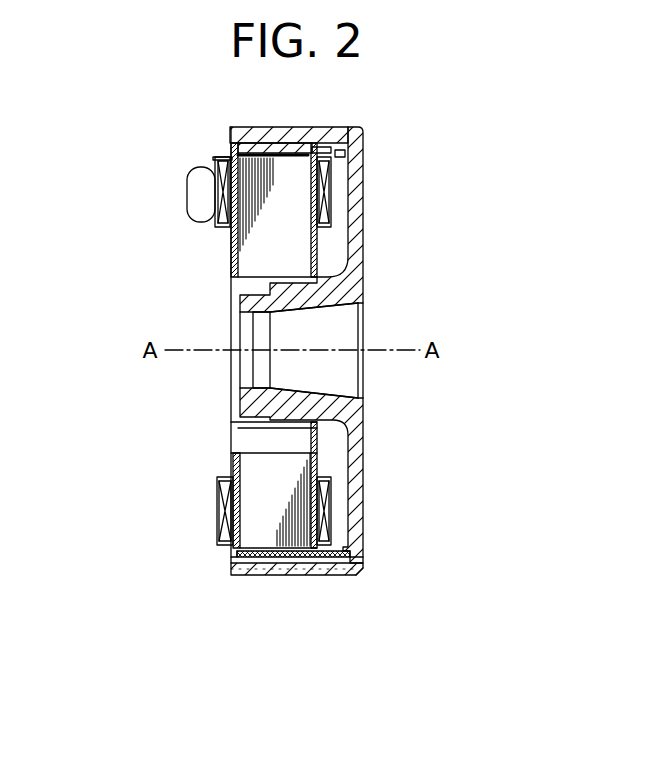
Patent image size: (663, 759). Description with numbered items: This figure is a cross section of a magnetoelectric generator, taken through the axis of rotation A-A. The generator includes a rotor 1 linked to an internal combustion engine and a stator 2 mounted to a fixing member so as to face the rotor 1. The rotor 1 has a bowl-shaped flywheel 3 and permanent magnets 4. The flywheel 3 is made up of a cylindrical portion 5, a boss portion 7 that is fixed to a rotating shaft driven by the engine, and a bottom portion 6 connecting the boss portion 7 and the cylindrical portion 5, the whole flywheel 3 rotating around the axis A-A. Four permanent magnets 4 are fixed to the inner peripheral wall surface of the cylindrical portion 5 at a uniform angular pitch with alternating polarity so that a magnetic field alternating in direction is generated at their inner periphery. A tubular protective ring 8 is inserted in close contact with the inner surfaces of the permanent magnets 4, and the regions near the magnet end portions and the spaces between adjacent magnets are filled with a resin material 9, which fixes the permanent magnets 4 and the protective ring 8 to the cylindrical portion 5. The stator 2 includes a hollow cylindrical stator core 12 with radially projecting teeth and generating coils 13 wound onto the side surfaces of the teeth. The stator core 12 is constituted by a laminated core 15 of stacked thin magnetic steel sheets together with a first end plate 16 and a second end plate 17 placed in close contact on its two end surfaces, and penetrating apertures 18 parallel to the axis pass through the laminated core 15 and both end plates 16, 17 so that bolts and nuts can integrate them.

The rotor 1 is at (352, 577).
The stator 2 is at (231, 250).
The flywheel 3 is at (363, 212).
The permanent magnets 4 is at (287, 143).
The cylindrical portion 5 is at (322, 570).
The bottom portion 6 is at (363, 170).
The boss portion 7 is at (287, 313).
The protective ring 8 is at (233, 562).
The resin material 9 is at (368, 560).
The stator core 12 is at (250, 265).
The generating coils 13 is at (220, 522).
The laminated core 15 is at (258, 233).
The first end plate 16 is at (218, 158).
The second end plate 17 is at (320, 258).
The penetrating apertures 18 is at (250, 448).